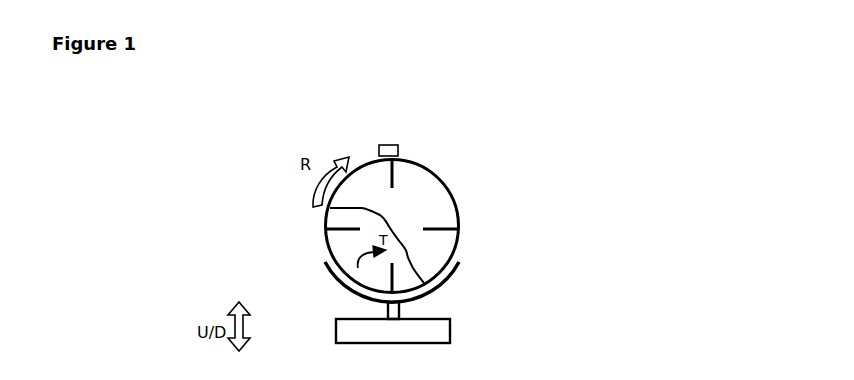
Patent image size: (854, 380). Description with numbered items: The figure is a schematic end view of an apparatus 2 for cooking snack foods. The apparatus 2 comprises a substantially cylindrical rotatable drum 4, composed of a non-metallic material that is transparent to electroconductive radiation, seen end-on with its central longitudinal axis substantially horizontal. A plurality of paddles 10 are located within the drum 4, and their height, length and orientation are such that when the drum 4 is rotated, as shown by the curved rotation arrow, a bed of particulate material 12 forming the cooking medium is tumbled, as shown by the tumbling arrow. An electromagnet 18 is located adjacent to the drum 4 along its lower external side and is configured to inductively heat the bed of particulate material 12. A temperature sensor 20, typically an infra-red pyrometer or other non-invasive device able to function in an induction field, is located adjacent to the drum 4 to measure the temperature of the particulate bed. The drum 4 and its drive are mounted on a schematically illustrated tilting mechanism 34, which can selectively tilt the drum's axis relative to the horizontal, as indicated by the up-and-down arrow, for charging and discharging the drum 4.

The apparatus 2 is at (160, 184).
The rotatable drum 4 is at (459, 244).
The paddles 10 is at (441, 224).
The bed of particulate material 12 is at (327, 247).
The electromagnet 18 is at (438, 289).
The temperature sensor 20 is at (390, 144).
The tilting mechanism 34 is at (337, 331).